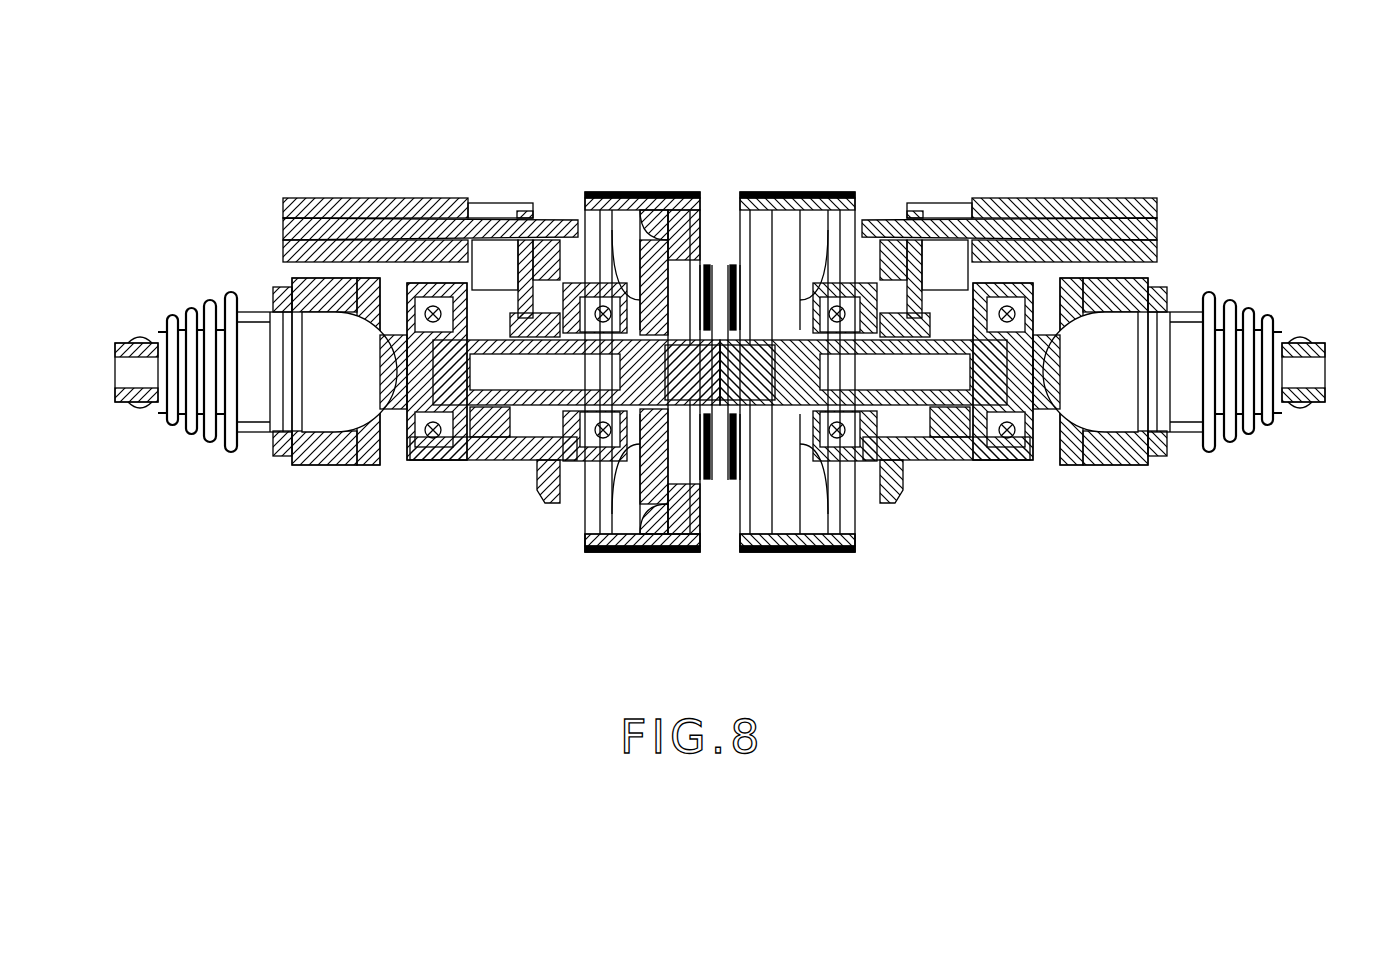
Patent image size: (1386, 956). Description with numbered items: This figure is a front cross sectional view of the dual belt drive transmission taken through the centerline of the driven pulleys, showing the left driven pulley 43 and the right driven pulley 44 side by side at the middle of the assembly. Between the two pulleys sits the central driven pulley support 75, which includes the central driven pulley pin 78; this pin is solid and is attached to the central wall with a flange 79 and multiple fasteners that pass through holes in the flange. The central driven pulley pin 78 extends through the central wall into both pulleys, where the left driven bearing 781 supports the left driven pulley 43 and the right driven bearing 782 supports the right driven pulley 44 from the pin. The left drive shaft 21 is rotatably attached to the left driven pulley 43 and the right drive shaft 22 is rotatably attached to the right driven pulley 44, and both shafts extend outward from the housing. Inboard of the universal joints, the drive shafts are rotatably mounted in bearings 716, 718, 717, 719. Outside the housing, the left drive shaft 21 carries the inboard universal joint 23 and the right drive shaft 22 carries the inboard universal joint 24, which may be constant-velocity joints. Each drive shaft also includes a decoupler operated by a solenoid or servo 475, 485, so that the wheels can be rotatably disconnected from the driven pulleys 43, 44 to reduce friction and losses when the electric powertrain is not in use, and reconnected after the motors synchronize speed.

The left drive shaft 21 is at (1312, 330).
The right drive shaft 22 is at (140, 330).
The inboard universal joint 23 is at (1232, 300).
The inboard universal joint 24 is at (212, 300).
The left driven pulley 43 is at (852, 192).
The right driven pulley 44 is at (695, 250).
The central driven pulley support 75 is at (727, 395).
The central driven pulley pin 78 is at (688, 370).
The flange 79 is at (713, 395).
The solenoid or servo 475 is at (1060, 200).
The solenoid or servo 485 is at (355, 208).
The bearing 716 is at (850, 480).
The bearing 717 is at (427, 443).
The bearing 718 is at (1010, 445).
The bearing 719 is at (583, 480).
The left driven bearing 781 is at (770, 540).
The right driven bearing 782 is at (597, 560).